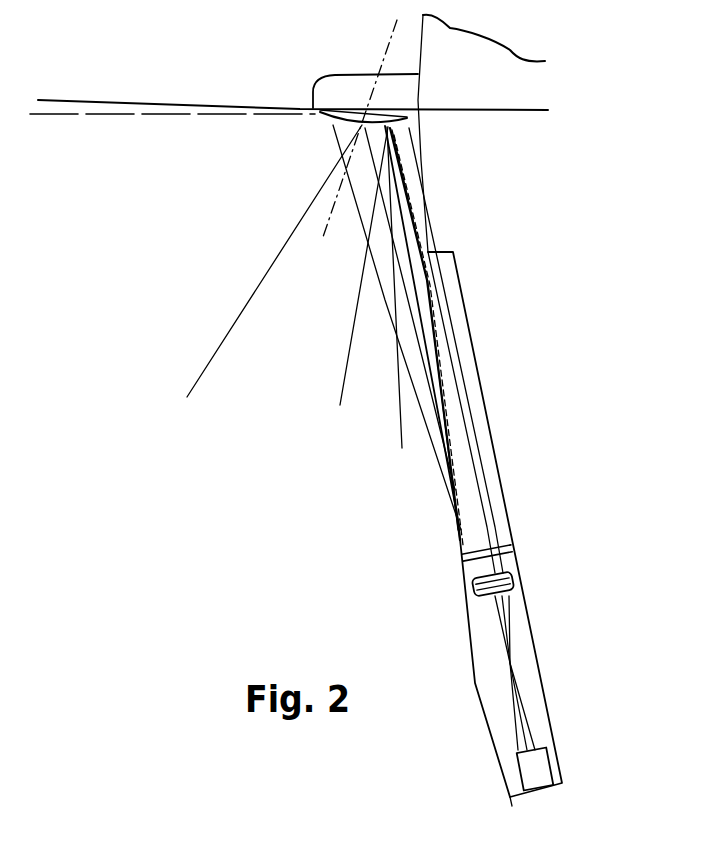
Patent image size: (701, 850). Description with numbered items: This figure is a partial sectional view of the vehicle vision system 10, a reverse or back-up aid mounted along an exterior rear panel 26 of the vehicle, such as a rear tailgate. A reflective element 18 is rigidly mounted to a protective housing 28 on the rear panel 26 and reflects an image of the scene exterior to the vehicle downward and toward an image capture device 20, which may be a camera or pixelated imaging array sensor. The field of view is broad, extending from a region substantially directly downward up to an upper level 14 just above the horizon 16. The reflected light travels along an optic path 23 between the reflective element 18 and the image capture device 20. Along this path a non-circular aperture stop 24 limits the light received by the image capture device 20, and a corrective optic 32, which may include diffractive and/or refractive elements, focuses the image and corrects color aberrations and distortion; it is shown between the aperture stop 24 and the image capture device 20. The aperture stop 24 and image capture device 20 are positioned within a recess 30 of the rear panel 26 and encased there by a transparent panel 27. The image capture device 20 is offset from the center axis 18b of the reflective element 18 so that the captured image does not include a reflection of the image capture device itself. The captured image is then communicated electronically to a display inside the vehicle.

The vehicle vision system 10 is at (116, 271).
The upper level 14 is at (97, 102).
The horizon 16 is at (70, 117).
The reflective element 18 is at (340, 127).
The center axis 18b is at (327, 217).
The image capture device 20 is at (540, 770).
The optic path 23 is at (463, 415).
The non-circular aperture stop 24 is at (510, 548).
The exterior rear panel 26 is at (466, 571).
The transparent panel 27 is at (453, 473).
The protective housing 28 is at (348, 87).
The recess 30 is at (457, 337).
The corrective optic 32 is at (512, 575).